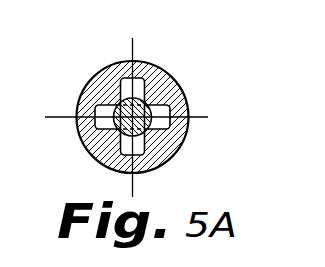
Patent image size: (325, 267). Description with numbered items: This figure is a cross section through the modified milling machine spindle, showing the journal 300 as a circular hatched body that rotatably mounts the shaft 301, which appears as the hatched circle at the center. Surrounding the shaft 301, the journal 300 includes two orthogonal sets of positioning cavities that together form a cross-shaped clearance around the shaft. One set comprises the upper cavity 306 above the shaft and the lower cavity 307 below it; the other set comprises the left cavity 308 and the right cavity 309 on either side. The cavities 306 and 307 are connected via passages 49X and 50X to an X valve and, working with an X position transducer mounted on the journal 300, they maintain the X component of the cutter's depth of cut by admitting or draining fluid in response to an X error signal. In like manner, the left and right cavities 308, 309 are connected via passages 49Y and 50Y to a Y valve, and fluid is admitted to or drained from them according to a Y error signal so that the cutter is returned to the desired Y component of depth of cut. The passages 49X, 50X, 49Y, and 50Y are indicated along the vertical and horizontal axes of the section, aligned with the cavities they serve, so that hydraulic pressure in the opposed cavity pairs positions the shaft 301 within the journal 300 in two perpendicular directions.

The journal 300 is at (173, 82).
The shaft 301 is at (168, 109).
The upper cavity 306 is at (147, 66).
The lower cavity 307 is at (142, 157).
The left cavity 308 is at (83, 135).
The right cavity 309 is at (190, 134).
The passage 49X is at (130, 42).
The passage 49Y is at (58, 115).
The passage 50X is at (130, 188).
The passage 50Y is at (209, 116).